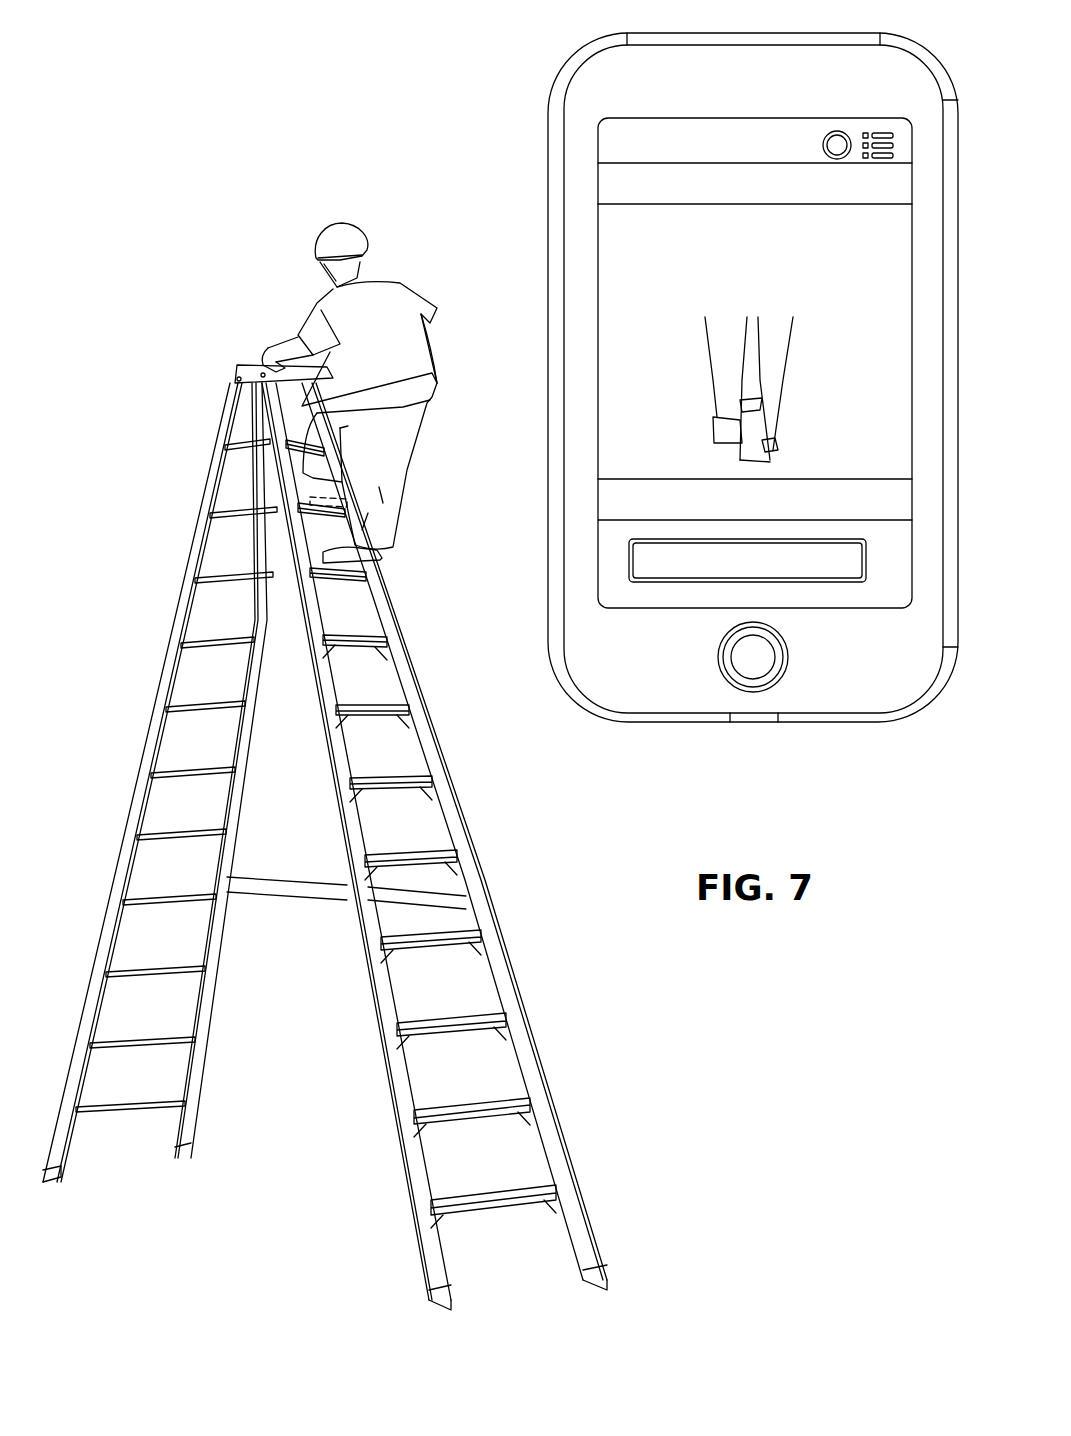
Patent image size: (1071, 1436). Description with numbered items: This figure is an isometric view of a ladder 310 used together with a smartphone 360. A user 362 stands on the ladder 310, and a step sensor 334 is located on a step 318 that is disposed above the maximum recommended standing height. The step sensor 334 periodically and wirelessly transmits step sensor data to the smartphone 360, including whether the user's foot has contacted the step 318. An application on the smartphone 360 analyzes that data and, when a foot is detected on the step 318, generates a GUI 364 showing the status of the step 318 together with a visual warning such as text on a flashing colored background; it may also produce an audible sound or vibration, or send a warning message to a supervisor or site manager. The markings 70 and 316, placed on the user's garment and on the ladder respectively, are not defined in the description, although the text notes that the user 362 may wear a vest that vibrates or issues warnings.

The worker / user 70 is at (381, 283).
The ladder 310 is at (200, 522).
The ladder rail 316 is at (534, 1058).
The step 318 is at (380, 598).
The step sensor 334 is at (330, 503).
The smartphone 360 is at (548, 153).
The user 362 is at (334, 223).
The GUI 364 is at (813, 116).